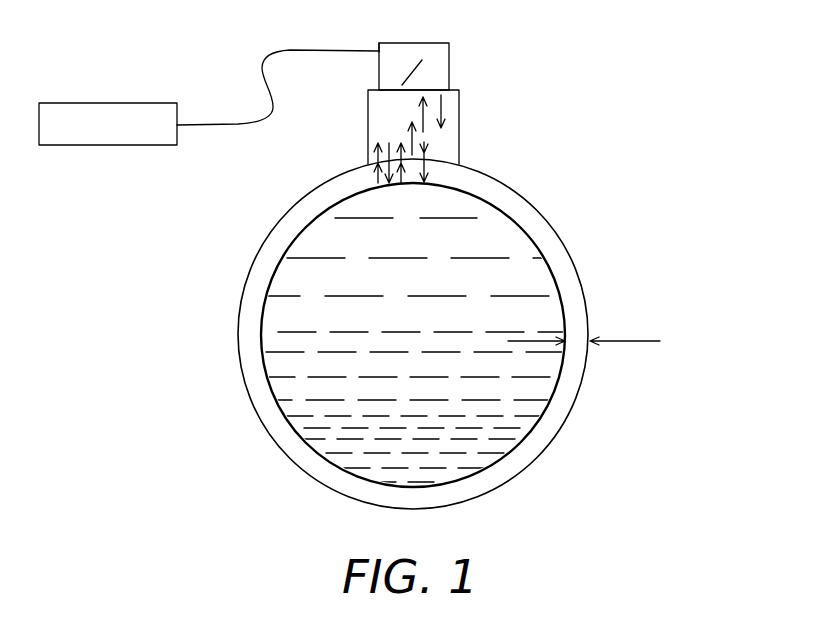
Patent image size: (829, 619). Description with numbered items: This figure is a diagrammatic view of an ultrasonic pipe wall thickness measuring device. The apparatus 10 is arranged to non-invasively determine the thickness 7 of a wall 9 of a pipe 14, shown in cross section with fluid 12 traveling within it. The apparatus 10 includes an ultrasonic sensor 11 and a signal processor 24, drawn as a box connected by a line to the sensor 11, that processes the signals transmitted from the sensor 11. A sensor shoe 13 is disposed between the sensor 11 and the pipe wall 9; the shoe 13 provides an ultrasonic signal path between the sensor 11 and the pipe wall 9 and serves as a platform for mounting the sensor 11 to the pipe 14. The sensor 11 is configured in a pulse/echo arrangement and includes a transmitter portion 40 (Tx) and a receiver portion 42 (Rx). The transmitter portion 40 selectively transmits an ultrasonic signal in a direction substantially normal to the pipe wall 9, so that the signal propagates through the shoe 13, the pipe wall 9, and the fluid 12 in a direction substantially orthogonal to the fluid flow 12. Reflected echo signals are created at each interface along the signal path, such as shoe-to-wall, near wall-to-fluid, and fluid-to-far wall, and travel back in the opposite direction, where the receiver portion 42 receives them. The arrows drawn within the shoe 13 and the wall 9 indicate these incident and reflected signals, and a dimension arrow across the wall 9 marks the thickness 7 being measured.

The thickness 7 is at (636, 341).
The wall 9 is at (545, 241).
The apparatus 10 is at (356, 91).
The ultrasonic sensor 11 is at (438, 53).
The fluid 12 is at (517, 415).
The sensor shoe 13 is at (459, 140).
The pipe 14 is at (268, 447).
The signal processor 24 is at (125, 103).
The transmitter portion 40 is at (443, 79).
The receiver portion 42 is at (379, 44).